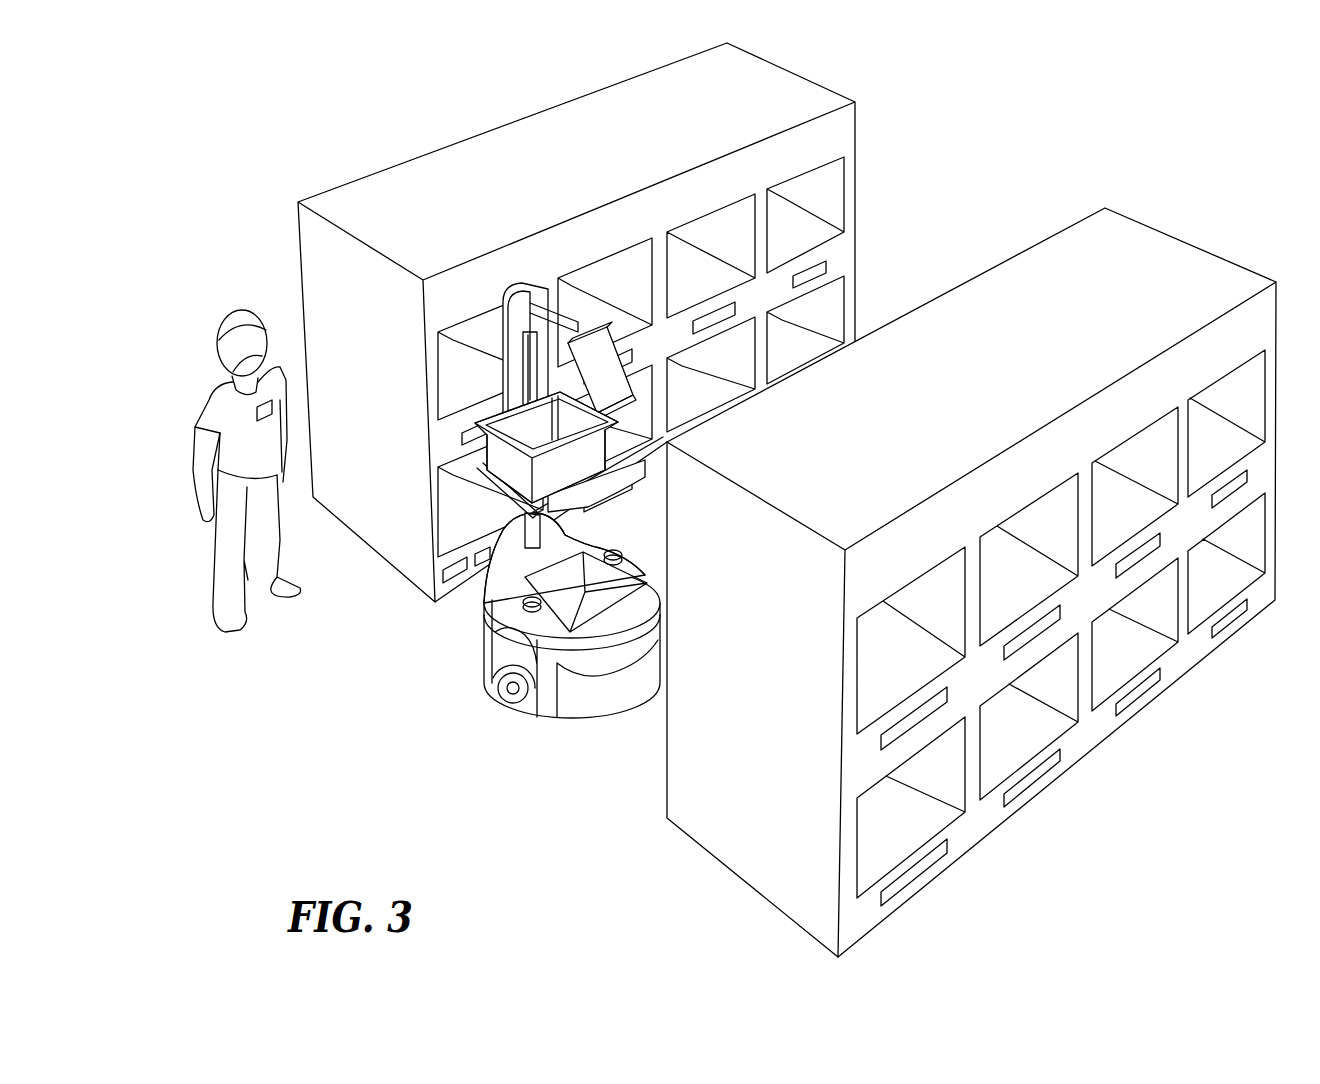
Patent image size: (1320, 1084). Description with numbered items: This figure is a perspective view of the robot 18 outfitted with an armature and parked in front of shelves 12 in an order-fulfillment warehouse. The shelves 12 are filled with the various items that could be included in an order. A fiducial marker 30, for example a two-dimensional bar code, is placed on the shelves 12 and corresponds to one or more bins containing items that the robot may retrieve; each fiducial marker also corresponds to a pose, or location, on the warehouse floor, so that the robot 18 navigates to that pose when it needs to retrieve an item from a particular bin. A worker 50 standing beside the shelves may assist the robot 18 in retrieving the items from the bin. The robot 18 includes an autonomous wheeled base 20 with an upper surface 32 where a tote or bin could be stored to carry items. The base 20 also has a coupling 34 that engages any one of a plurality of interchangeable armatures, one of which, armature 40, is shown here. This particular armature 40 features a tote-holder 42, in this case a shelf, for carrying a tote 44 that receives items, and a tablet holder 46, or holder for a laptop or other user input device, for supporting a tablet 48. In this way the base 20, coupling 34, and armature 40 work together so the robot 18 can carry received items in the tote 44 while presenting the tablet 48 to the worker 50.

The shelves 12 is at (402, 165).
The robot 18 is at (570, 502).
The autonomous wheeled base 20 is at (543, 718).
The fiducial marker 30 is at (455, 578).
The upper surface 32 is at (598, 608).
The coupling 34 is at (528, 522).
The armature 40 is at (540, 300).
The tote-holder 42 is at (480, 473).
The tote 44 is at (525, 430).
The tablet holder 46 is at (600, 405).
The tablet 48 is at (600, 353).
The worker 50 is at (210, 382).